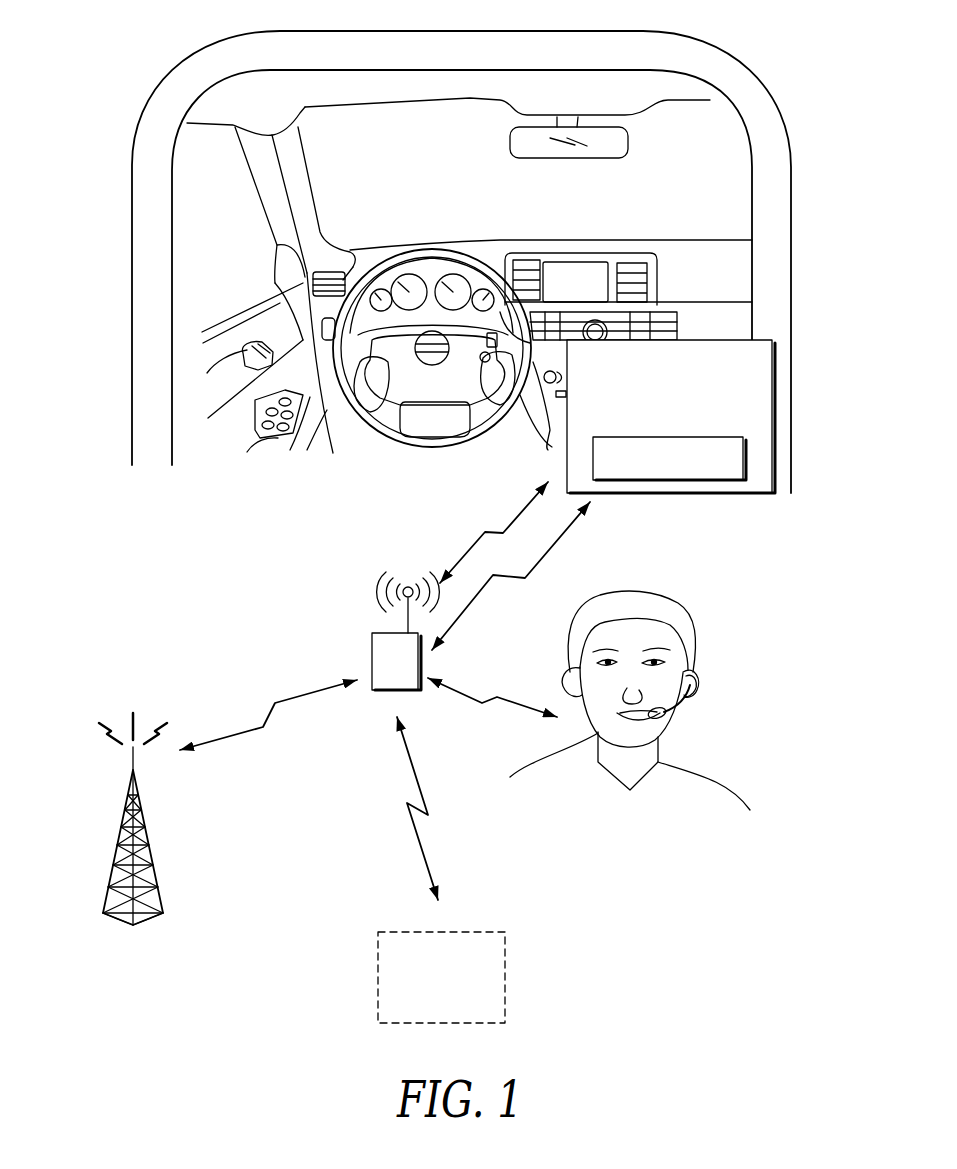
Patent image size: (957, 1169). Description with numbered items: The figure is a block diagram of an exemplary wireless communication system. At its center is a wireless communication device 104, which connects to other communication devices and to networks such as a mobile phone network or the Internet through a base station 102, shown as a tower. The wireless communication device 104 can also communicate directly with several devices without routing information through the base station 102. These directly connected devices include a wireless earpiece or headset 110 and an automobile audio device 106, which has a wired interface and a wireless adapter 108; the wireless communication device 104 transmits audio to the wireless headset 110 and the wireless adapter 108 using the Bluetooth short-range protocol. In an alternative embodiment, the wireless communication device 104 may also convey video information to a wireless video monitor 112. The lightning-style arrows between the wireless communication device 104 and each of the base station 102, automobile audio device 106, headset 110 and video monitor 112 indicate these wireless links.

The base station 102 is at (112, 865).
The wireless communication device 104 is at (372, 661).
The automobile audio device 106 is at (699, 416).
The wireless adapter 108 is at (624, 435).
The wireless earpiece or headset 110 is at (696, 698).
The wireless video monitor 112 is at (488, 932).